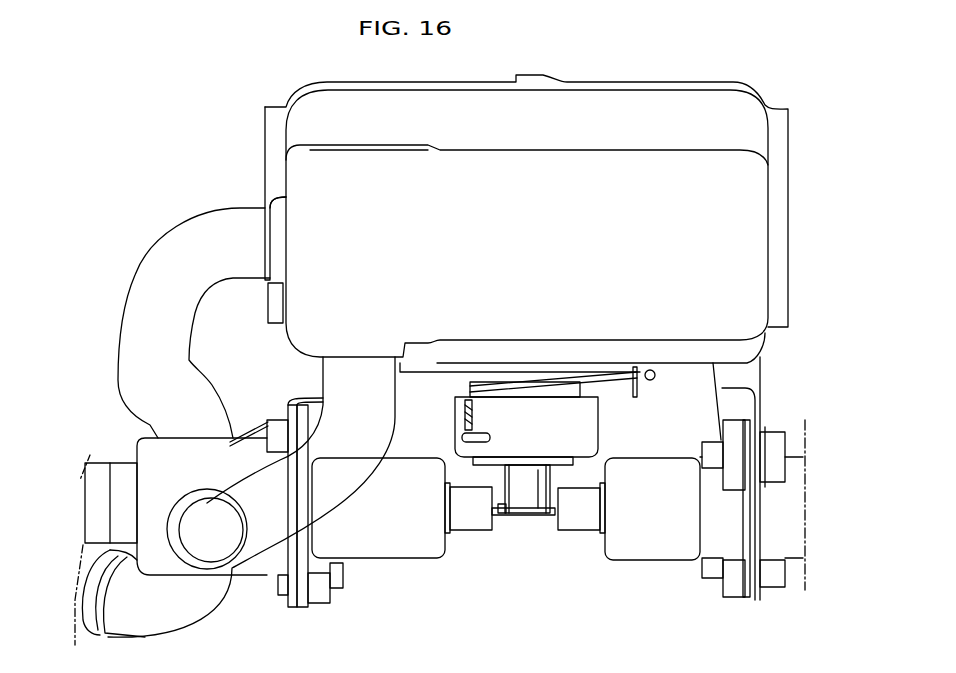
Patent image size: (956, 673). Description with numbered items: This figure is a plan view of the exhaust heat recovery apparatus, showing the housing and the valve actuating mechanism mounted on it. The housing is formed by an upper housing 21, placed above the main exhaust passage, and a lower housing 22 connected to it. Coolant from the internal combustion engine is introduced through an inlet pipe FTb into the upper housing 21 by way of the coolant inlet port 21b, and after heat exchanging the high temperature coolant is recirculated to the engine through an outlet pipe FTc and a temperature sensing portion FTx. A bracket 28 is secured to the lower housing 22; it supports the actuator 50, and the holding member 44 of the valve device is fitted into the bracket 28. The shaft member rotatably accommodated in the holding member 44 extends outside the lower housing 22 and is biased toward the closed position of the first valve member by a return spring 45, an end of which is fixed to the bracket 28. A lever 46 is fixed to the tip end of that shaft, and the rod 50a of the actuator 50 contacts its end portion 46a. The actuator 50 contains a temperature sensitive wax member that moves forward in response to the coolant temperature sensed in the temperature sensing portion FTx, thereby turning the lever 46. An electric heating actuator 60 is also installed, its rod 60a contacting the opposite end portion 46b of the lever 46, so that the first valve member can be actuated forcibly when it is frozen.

The upper housing 21 is at (280, 133).
The coolant inlet port 21b is at (278, 218).
The lower housing 22 is at (272, 330).
The bracket 28 is at (300, 608).
The holding member 44 is at (483, 365).
The return spring 45 is at (612, 380).
The lever 46 is at (525, 516).
The end portion 46a is at (503, 514).
The opposite end portion 46b is at (538, 500).
The actuator 50 is at (392, 562).
The rod 50a is at (467, 520).
The electric heating actuator 60 is at (642, 562).
The rod 60a is at (588, 520).
The inlet pipe FTb is at (163, 268).
The temperature sensing portion FTx is at (160, 463).
The outlet pipe FTc is at (230, 550).